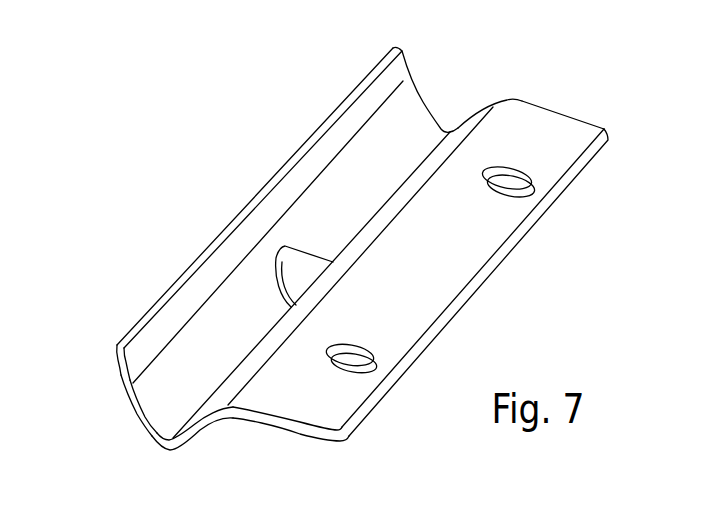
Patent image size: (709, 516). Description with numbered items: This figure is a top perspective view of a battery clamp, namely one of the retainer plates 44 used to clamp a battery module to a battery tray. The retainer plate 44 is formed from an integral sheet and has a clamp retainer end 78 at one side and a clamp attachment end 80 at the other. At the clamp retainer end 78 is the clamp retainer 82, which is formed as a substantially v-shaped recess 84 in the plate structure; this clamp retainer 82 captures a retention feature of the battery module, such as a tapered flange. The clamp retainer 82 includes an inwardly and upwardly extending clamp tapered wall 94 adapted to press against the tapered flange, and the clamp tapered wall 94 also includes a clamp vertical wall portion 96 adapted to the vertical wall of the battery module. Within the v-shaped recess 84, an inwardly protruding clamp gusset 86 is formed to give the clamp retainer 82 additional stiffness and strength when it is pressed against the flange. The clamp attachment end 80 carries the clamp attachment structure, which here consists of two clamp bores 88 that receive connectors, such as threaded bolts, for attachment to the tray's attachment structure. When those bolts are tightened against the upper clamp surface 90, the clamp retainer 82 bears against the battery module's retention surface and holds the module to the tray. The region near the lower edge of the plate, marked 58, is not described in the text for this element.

The retainer plate 44 is at (361, 264).
The plate near end edge 58 is at (295, 440).
The clamp retainer end 78 is at (225, 228).
The clamp attachment end 80 is at (523, 233).
The clamp retainer 82 is at (160, 402).
The v-shaped recess 84 is at (436, 122).
The clamp gusset 86 is at (311, 272).
The clamp bore 88 is at (516, 185).
The upper clamp surface 90 is at (435, 272).
The clamp tapered wall 94 is at (132, 407).
The clamp vertical wall portion 96 is at (118, 343).